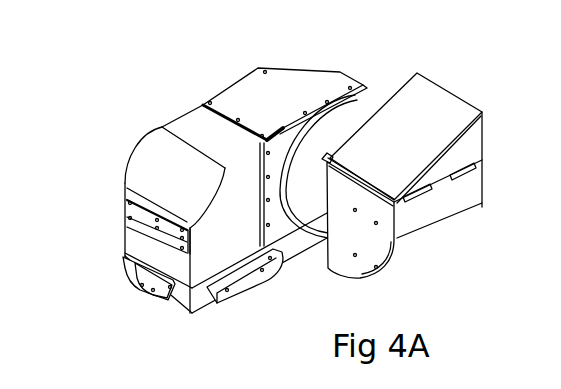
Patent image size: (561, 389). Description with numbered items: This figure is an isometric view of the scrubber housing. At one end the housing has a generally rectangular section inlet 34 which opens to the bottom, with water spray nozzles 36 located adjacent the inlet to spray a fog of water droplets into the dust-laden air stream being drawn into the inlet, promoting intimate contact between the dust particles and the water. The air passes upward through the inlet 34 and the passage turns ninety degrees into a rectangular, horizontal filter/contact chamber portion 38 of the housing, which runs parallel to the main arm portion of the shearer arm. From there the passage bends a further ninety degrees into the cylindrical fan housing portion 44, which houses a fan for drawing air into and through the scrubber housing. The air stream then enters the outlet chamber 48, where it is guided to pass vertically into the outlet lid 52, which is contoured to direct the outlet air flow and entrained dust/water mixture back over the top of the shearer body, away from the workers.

The inlet 34 is at (133, 241).
The water spray nozzles 36 is at (145, 288).
The filter/contact chamber portion 38 is at (247, 92).
The fan housing portion 44 is at (348, 118).
The outlet chamber 48 is at (440, 200).
The outlet lid 52 is at (413, 150).